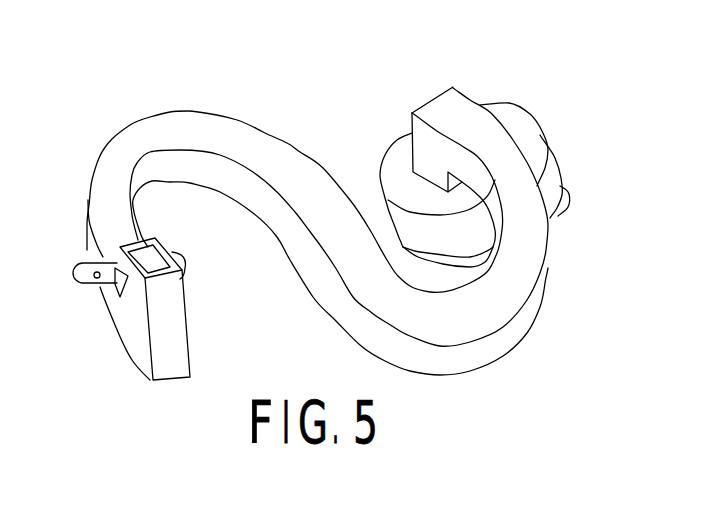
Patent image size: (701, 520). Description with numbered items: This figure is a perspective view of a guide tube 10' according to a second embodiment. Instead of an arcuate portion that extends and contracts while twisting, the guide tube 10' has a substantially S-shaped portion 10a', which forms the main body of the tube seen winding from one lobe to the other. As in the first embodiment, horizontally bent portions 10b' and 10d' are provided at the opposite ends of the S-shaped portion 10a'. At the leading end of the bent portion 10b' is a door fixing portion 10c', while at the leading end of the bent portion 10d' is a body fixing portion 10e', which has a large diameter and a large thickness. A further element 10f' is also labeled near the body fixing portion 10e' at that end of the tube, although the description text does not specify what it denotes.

The guide tube 10' is at (295, 150).
The S-shaped portion 10a' is at (318, 208).
The horizontally bent portion 10b' is at (198, 309).
The door fixing portion 10c' is at (113, 308).
The horizontally bent portion 10d' is at (418, 155).
The body fixing portion 10e' is at (550, 132).
The end tab 10f' is at (591, 186).